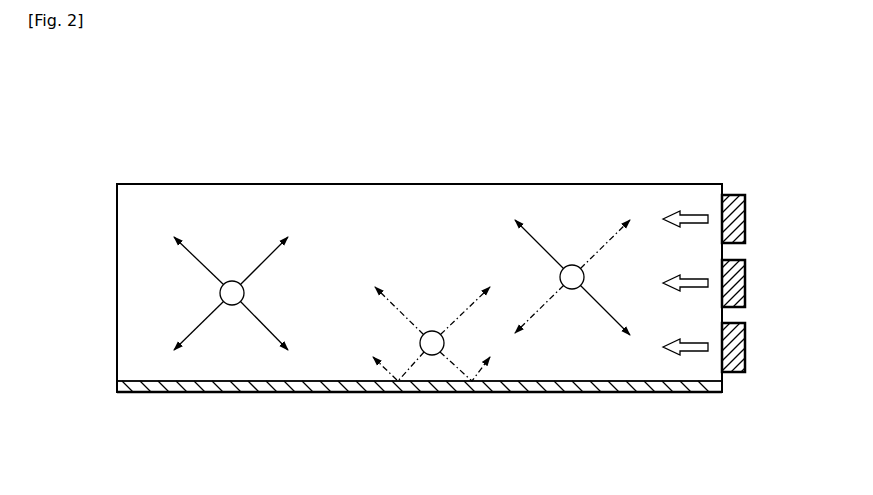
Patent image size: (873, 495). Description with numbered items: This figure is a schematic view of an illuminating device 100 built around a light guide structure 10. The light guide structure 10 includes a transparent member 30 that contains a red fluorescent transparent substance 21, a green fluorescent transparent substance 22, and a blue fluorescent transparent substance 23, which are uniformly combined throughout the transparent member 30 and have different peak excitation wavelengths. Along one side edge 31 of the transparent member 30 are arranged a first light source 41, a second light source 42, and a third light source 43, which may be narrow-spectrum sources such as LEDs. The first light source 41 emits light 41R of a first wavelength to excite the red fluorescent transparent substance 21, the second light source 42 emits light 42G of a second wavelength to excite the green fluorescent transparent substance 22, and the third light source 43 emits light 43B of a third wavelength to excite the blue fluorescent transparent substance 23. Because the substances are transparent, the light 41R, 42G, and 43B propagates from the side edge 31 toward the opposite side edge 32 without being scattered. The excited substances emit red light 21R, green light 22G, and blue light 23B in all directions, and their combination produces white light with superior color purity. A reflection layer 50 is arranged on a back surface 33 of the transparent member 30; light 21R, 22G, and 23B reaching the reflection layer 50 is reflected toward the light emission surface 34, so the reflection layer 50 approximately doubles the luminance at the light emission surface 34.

The illuminating device 100 is at (673, 95).
The light guide structure 10 is at (276, 169).
The transparent member 30 is at (164, 209).
The side edge 31 is at (723, 313).
The opposite side edge 32 is at (117, 266).
The back surface 33 is at (393, 184).
The light emission surface 34 is at (338, 388).
The reflection layer 50 is at (403, 383).
The red fluorescent transparent substance 21 is at (232, 305).
The red light 21R is at (257, 267).
The green fluorescent transparent substance 22 is at (444, 343).
The green light 22G is at (460, 315).
The blue fluorescent transparent substance 23 is at (570, 265).
The blue light 23B is at (602, 307).
The first light source 41 is at (746, 216).
The light of first wavelength 41R is at (671, 213).
The second light source 42 is at (746, 281).
The light of second wavelength 42G is at (677, 276).
The third light source 43 is at (746, 346).
The light of third wavelength 43B is at (676, 338).